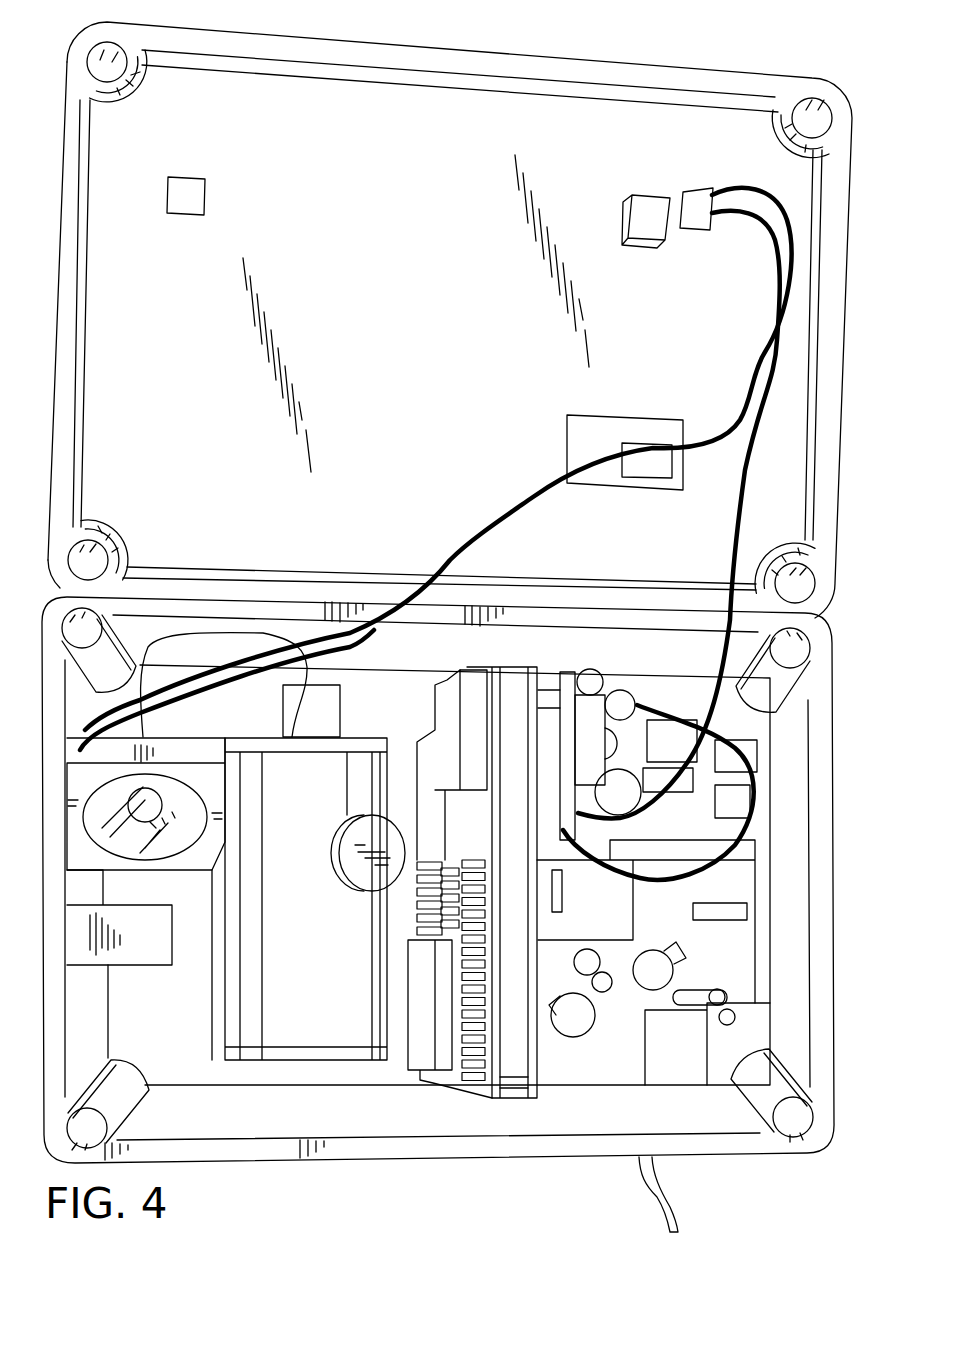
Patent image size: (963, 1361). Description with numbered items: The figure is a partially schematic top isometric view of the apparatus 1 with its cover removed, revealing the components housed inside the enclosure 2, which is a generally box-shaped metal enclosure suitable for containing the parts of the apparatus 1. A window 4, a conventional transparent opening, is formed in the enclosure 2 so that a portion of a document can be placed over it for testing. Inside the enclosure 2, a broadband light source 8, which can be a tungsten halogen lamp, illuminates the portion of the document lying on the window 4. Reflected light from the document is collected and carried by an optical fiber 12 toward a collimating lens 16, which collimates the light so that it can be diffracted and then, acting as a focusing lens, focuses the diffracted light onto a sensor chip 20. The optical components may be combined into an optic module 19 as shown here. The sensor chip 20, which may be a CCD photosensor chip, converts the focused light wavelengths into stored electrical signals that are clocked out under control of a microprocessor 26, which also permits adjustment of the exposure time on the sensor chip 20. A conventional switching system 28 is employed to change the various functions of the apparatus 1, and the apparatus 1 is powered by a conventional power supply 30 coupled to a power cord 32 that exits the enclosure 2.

The apparatus 1 is at (745, 1158).
The enclosure 2 is at (837, 682).
The window 4 is at (205, 197).
The broadband light source 8 is at (160, 855).
The optical fiber 12 is at (212, 630).
The collimating lens 16 is at (123, 957).
The optic module 19 is at (330, 1028).
The sensor chip 20 is at (333, 707).
The microprocessor 26 is at (520, 1053).
The switching system 28 is at (637, 193).
The power supply 30 is at (673, 880).
The power cord 32 is at (651, 1197).